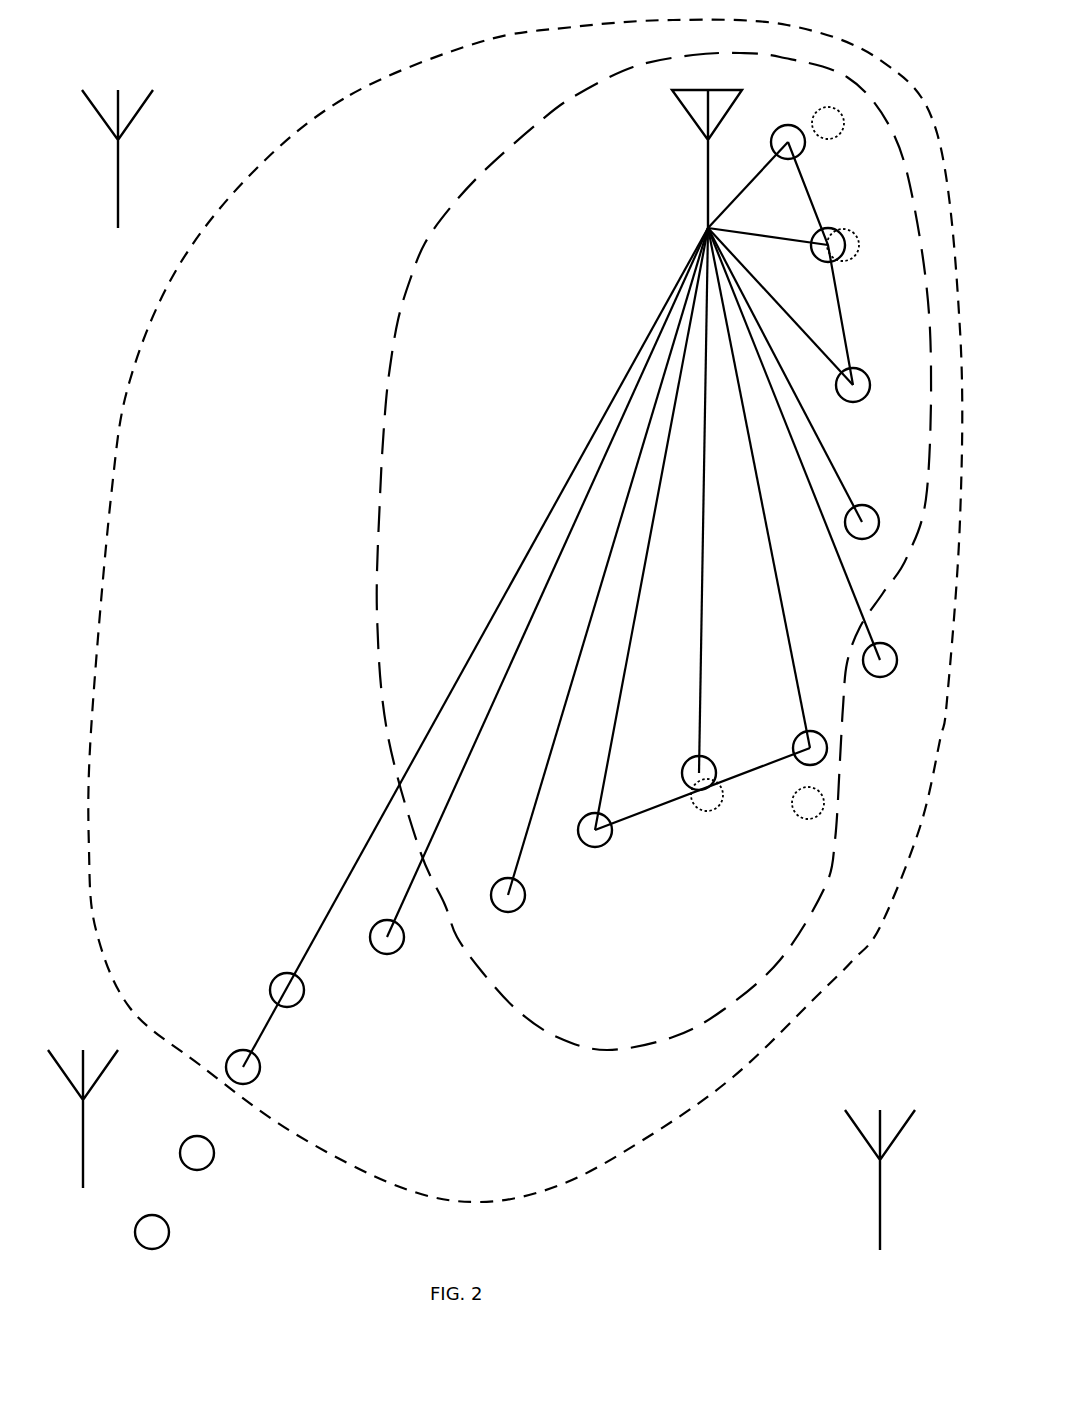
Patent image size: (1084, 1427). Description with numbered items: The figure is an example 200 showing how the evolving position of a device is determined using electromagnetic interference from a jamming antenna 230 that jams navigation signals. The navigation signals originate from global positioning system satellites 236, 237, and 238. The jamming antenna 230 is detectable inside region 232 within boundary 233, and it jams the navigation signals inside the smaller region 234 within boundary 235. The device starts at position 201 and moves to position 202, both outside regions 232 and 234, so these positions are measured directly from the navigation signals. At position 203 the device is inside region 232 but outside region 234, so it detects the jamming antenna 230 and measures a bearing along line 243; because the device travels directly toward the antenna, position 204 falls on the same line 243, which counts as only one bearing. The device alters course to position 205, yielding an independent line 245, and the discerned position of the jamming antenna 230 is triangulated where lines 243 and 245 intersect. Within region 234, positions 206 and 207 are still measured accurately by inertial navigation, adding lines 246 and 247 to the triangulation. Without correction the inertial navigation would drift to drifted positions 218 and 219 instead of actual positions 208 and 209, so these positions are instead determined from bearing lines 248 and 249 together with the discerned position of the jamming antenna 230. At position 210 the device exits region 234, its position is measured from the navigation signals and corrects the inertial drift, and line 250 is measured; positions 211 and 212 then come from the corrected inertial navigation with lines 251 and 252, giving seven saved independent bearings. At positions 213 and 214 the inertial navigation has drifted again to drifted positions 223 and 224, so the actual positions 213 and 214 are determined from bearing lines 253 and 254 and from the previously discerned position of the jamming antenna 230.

The example 200 is at (66, 58).
The position 201 is at (169, 1232).
The position 202 is at (214, 1153).
The position 203 is at (260, 1068).
The position 204 is at (304, 991).
The position 205 is at (404, 938).
The position 206 is at (525, 895).
The position 207 is at (612, 832).
The position 208 is at (683, 770).
The position 209 is at (797, 759).
The position 210 is at (897, 660).
The position 211 is at (879, 522).
The position 212 is at (870, 385).
The position 213 is at (816, 257).
The position 214 is at (804, 150).
The drifted position 218 is at (707, 811).
The drifted position 219 is at (808, 819).
The drifted position 223 is at (859, 245).
The drifted position 224 is at (812, 122).
The jamming antenna 230 is at (706, 173).
The region 232 is at (258, 489).
The boundary 233 is at (109, 497).
The region 234 is at (499, 489).
The boundary 235 is at (378, 497).
The global positioning system satellite 236 is at (117, 177).
The global positioning system satellite 237 is at (82, 1136).
The global positioning system satellite 238 is at (879, 1196).
The bearing line 243 is at (331, 906).
The bearing line 245 is at (401, 905).
The bearing line 246 is at (521, 847).
The bearing line 247 is at (603, 788).
The bearing line 248 is at (698, 708).
The bearing line 249 is at (802, 710).
The bearing line 250 is at (845, 572).
The bearing line 251 is at (838, 476).
The bearing line 252 is at (819, 349).
The bearing line 253 is at (778, 238).
The bearing line 254 is at (763, 169).